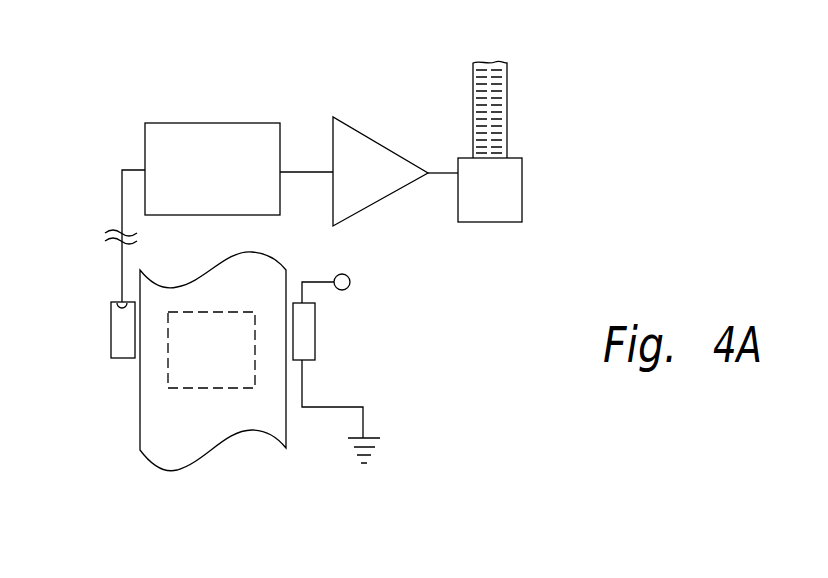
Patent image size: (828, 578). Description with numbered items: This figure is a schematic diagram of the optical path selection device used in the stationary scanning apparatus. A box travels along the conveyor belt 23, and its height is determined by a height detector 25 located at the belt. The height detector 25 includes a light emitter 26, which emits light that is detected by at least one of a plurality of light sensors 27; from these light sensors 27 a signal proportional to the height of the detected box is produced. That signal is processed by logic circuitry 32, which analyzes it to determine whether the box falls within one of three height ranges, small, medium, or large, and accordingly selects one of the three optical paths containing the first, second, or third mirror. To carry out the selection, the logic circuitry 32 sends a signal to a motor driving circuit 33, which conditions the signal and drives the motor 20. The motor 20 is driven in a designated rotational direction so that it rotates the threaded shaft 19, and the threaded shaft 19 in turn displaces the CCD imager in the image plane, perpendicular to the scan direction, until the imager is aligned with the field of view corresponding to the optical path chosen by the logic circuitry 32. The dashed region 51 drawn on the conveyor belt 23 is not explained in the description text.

The movable actuator member 19 is at (500, 117).
The actuator 20 is at (505, 192).
The sheet 23 is at (223, 427).
The electrode contact 25 is at (118, 350).
The resistor 26 is at (312, 335).
The contact lead 27 is at (112, 322).
The logic circuit 32 is at (212, 123).
The amplifier 33 is at (363, 152).
The sensing region 51 is at (205, 388).